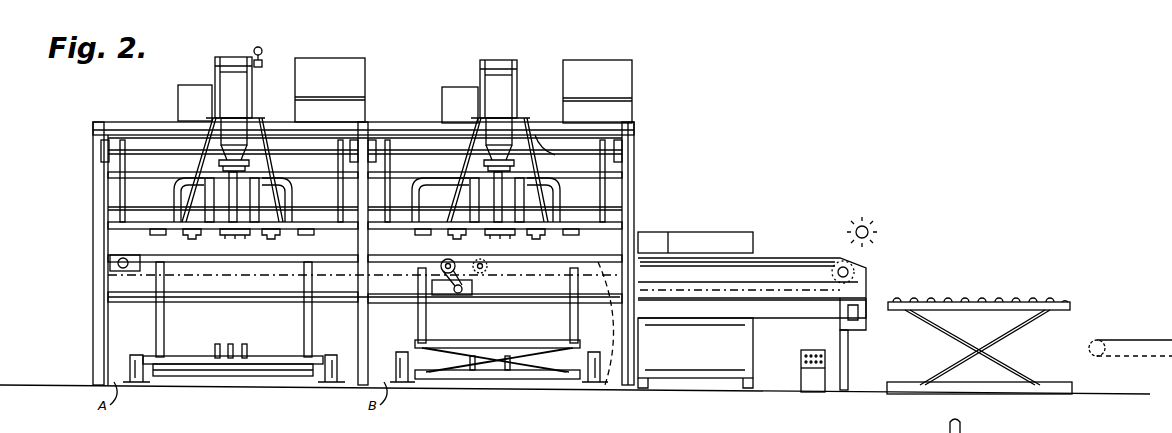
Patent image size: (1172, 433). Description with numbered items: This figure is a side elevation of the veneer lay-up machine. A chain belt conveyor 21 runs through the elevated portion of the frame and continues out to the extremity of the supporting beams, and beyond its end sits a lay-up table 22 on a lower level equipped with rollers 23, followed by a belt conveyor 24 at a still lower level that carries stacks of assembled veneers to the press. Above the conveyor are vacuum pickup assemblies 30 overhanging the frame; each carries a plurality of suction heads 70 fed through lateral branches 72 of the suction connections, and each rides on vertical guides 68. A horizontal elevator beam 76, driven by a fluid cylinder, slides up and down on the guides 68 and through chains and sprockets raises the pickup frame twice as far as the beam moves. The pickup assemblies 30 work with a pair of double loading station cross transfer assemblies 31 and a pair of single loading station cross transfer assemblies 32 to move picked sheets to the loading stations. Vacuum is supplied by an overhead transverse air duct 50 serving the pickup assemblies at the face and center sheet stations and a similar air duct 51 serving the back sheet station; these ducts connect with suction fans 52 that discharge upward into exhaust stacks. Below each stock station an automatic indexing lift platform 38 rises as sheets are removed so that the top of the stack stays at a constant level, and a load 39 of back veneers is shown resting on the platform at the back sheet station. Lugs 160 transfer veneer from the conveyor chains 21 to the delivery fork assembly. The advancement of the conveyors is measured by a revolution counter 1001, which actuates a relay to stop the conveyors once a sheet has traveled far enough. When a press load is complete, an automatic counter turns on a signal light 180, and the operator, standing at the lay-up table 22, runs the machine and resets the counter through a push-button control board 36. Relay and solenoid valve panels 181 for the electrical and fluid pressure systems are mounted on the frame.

The chain belt conveyor 21 is at (786, 260).
The lay-up table 22 is at (957, 302).
The rollers 23 is at (1005, 301).
The belt conveyor 24 is at (1130, 346).
The vacuum pickup assembly 30 is at (108, 233).
The double loading station cross transfer assembly 31 is at (200, 246).
The single loading station cross transfer assembly 32 is at (281, 224).
The control board 36 is at (801, 377).
The automatic indexing lift platform 38 is at (545, 376).
The load of back veneers 39 is at (605, 385).
The overhead transverse air duct 50 is at (226, 60).
The air duct 51 is at (498, 62).
The suction fan 52 is at (178, 97).
The vertical guide 68 is at (636, 163).
The suction head 70 is at (155, 236).
The lateral branch 72 is at (178, 178).
The horizontal elevator beam 76 is at (556, 137).
The lug 160 is at (963, 432).
The signal light 180 is at (872, 237).
The relay and solenoid valve panels 181 is at (322, 62).
The revolution counter 1001 is at (458, 295).